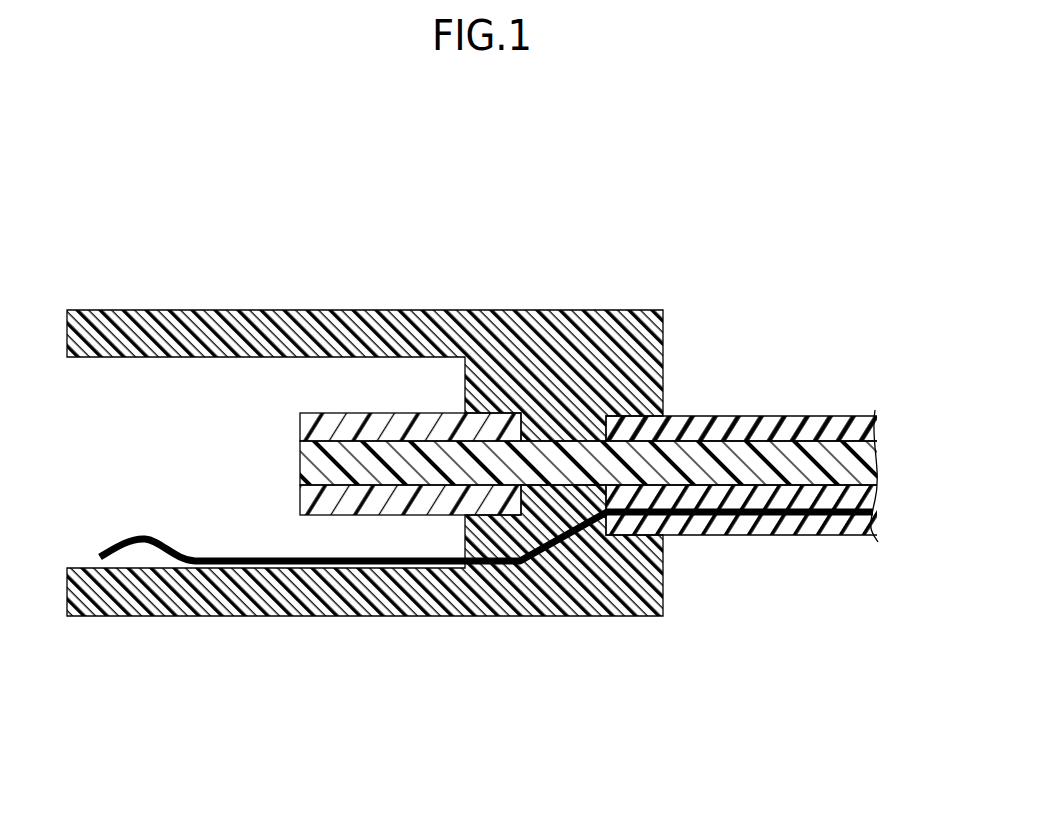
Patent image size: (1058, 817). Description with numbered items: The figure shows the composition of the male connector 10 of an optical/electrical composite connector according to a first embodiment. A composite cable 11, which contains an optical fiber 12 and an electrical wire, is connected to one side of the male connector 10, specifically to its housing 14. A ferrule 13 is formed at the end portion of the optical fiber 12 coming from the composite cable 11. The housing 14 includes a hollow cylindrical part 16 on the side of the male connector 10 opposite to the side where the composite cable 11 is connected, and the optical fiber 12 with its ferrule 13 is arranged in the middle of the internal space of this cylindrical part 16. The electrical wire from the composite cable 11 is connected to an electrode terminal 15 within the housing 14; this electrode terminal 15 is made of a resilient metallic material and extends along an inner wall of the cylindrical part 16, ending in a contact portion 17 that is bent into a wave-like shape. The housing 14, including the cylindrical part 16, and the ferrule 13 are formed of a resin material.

The male connector 10 is at (683, 241).
The composite cable 11 is at (775, 428).
The optical fiber 12 is at (577, 462).
The ferrule 13 is at (491, 425).
The housing 14 is at (622, 606).
The electrode terminal 15 is at (529, 553).
The cylindrical part 16 is at (200, 600).
The contact portion 17 is at (141, 540).